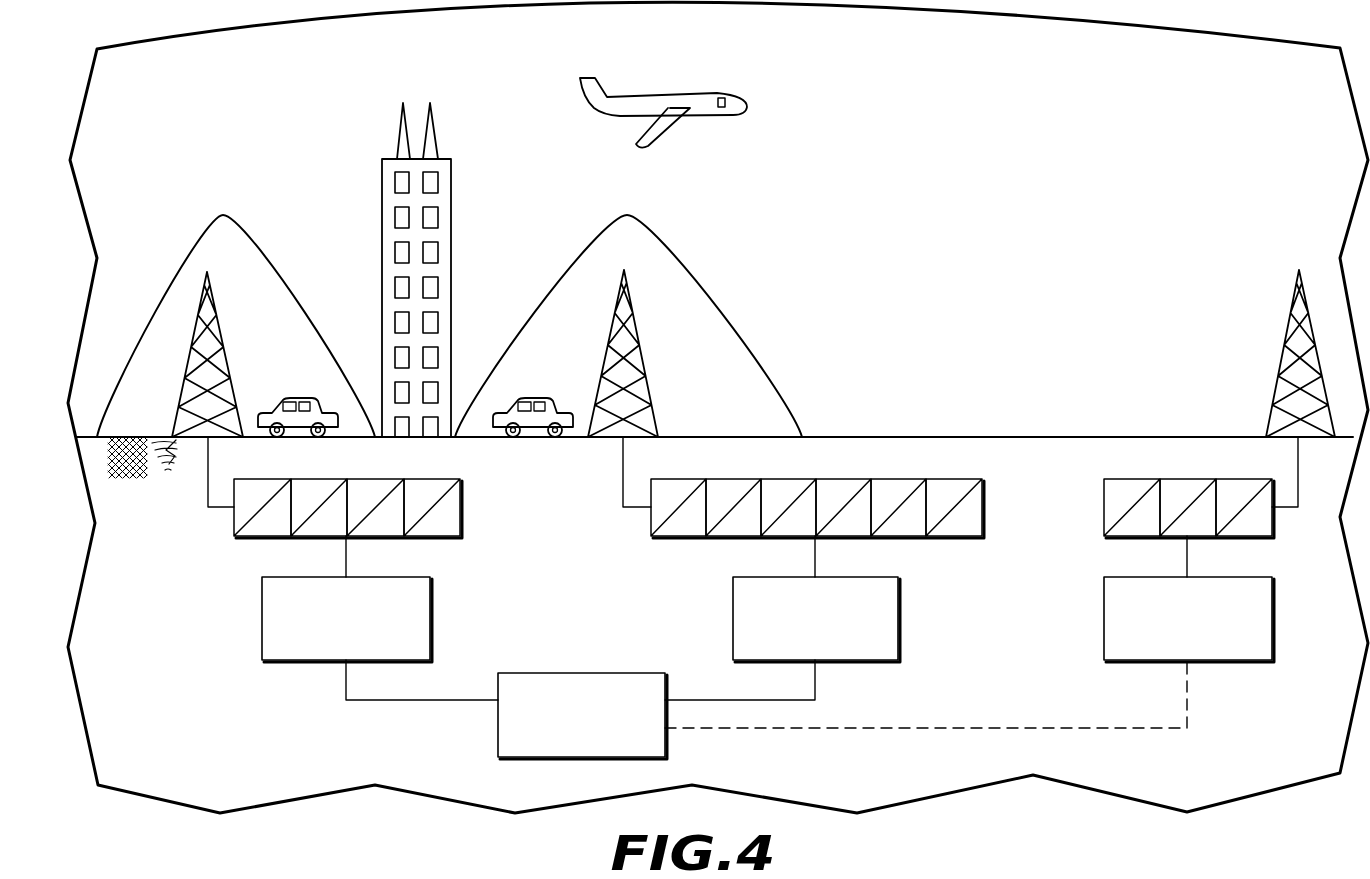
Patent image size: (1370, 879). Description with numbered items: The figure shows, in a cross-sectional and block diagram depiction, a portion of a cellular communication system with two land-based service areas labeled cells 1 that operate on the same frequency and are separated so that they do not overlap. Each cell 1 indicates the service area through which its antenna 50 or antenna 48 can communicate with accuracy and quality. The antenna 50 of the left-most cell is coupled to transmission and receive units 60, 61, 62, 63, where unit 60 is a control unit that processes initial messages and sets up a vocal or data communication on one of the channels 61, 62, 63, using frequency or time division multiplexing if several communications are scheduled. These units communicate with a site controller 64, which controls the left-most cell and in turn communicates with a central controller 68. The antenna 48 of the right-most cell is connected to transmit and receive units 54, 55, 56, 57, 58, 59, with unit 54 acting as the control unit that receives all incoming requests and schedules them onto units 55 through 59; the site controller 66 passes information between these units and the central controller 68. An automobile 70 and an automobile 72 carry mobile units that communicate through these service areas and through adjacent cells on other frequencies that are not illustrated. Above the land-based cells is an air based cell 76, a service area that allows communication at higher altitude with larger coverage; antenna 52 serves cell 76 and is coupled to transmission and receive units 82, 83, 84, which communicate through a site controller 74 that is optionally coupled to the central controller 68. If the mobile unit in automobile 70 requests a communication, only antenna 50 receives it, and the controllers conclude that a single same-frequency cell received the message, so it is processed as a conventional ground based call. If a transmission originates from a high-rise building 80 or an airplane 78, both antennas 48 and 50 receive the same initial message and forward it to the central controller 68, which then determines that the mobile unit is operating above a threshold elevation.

The cell 1 is at (258, 270).
The antenna 48 is at (641, 344).
The antenna 50 is at (222, 332).
The antenna 52 is at (1281, 345).
The transmit and receive unit 54 is at (676, 479).
The transmit and receive unit 55 is at (731, 479).
The transmit and receive unit 56 is at (786, 479).
The transmit and receive unit 57 is at (841, 479).
The transmit and receive unit 58 is at (896, 479).
The transmit and receive unit 59 is at (951, 479).
The transmission and receive unit 60 is at (259, 479).
The transmission and receive unit 61 is at (316, 479).
The transmission and receive unit 62 is at (372, 479).
The transmission and receive unit 63 is at (429, 479).
The site controller 64 is at (302, 664).
The site controller 66 is at (880, 663).
The central controller 68 is at (542, 673).
The automobile 70 is at (301, 398).
The automobile 72 is at (540, 398).
The site controller 74 is at (1240, 663).
The air based cell 76 is at (1064, 103).
The airplane 78 is at (685, 92).
The high-rise building 80 is at (451, 220).
The transmission and receive unit 82 is at (1129, 479).
The transmission and receive unit 83 is at (1185, 479).
The transmission and receive unit 84 is at (1241, 479).